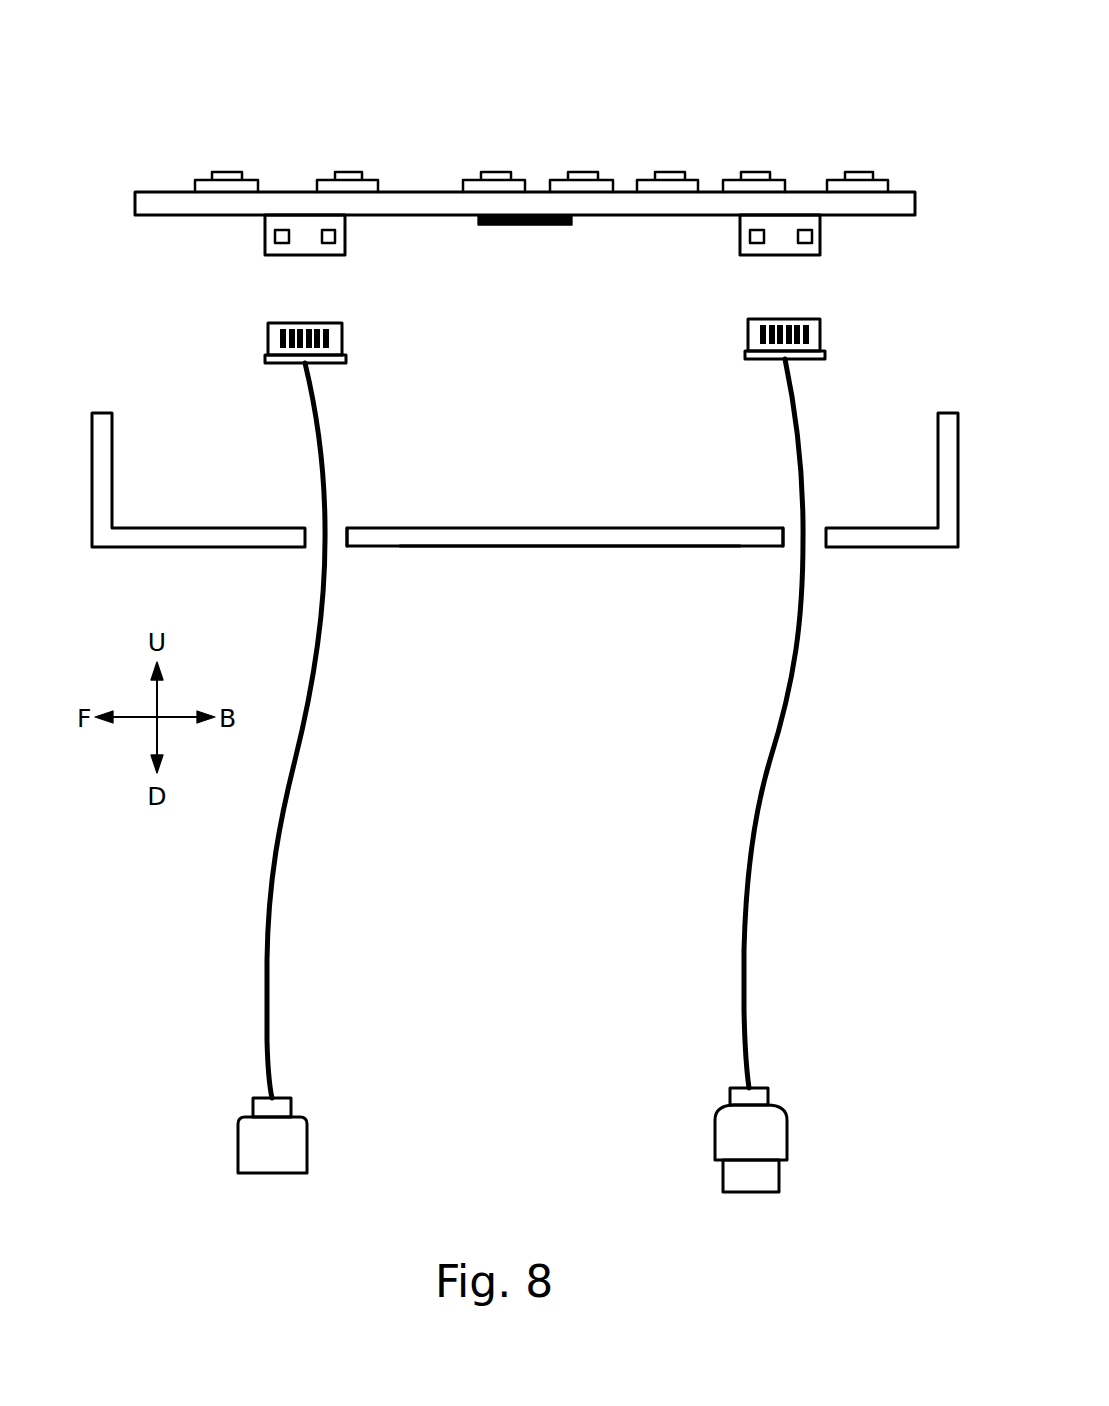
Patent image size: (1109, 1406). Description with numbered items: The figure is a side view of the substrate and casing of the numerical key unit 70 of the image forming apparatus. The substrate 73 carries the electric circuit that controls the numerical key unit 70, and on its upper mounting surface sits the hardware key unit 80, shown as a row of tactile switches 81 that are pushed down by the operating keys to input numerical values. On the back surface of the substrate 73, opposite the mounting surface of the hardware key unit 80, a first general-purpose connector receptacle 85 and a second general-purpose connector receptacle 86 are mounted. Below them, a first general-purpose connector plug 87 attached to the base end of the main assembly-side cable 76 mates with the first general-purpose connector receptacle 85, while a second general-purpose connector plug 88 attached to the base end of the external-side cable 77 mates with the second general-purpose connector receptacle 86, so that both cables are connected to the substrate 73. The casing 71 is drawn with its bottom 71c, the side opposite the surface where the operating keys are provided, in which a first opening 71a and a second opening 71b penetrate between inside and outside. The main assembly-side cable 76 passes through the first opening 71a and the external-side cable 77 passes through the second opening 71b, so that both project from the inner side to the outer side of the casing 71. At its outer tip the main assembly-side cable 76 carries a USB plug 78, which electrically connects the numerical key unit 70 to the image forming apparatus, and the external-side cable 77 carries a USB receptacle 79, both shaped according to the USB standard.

The numerical key unit 70 is at (568, 60).
The hardware key unit 80 is at (905, 160).
The substrate 73 is at (150, 196).
The tactile switch 81 is at (771, 173).
The first general-purpose connector receptacle 85 is at (813, 243).
The second general-purpose connector receptacle 86 is at (338, 245).
The first general-purpose connector plug 87 is at (815, 338).
The second general-purpose connector plug 88 is at (335, 340).
The casing 71 is at (528, 537).
The first opening 71a is at (827, 533).
The second opening 71b is at (347, 534).
The bottom 71c is at (641, 562).
The main assembly-side cable 76 is at (757, 843).
The external-side cable 77 is at (272, 910).
The USB plug 78 is at (771, 1137).
The USB receptacle 79 is at (296, 1145).